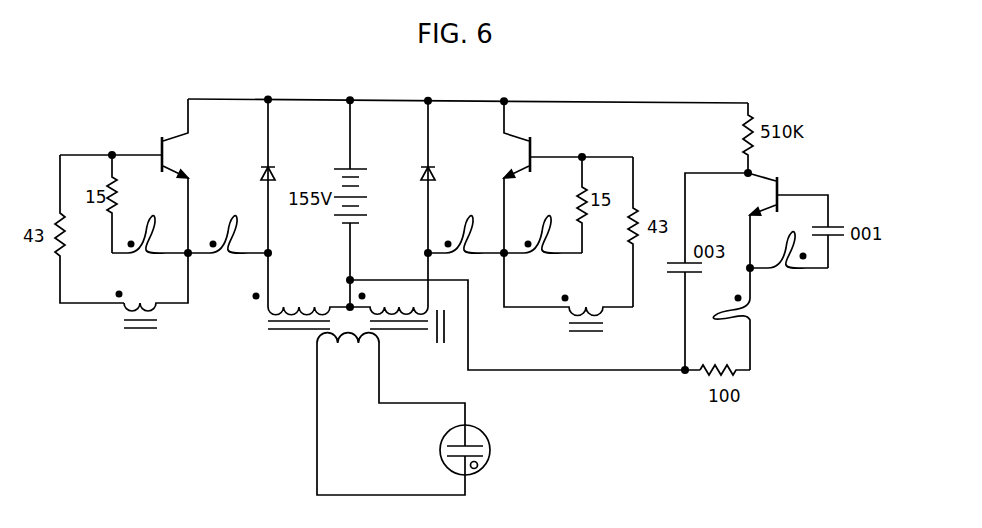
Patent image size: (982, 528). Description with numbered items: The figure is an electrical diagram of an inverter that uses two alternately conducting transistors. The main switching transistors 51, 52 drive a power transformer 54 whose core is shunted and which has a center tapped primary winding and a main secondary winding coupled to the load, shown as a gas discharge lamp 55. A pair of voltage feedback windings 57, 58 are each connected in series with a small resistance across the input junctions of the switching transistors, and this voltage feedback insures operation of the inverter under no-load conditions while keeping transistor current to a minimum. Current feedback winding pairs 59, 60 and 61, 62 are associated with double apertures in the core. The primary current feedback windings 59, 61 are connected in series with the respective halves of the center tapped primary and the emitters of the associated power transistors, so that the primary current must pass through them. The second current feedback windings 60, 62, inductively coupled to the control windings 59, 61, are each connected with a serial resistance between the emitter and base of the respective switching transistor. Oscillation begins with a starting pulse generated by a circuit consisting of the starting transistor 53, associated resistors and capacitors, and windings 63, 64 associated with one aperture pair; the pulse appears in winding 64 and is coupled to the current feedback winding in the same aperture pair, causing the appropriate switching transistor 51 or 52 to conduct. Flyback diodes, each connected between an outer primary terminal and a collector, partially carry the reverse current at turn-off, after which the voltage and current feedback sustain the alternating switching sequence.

The main switching transistor 51 is at (172, 153).
The main switching transistor 52 is at (525, 152).
The starting transistor 53 is at (772, 191).
The power transformer 54 is at (247, 367).
The gas discharge lamp 55 is at (492, 452).
The voltage feedback winding 57 is at (122, 309).
The voltage feedback winding 58 is at (604, 314).
The current feedback winding 59 is at (223, 215).
The current feedback winding 60 is at (144, 215).
The current feedback winding 61 is at (458, 218).
The current feedback winding 62 is at (534, 218).
The starting circuit winding 63 is at (791, 229).
The starting circuit winding 64 is at (718, 319).